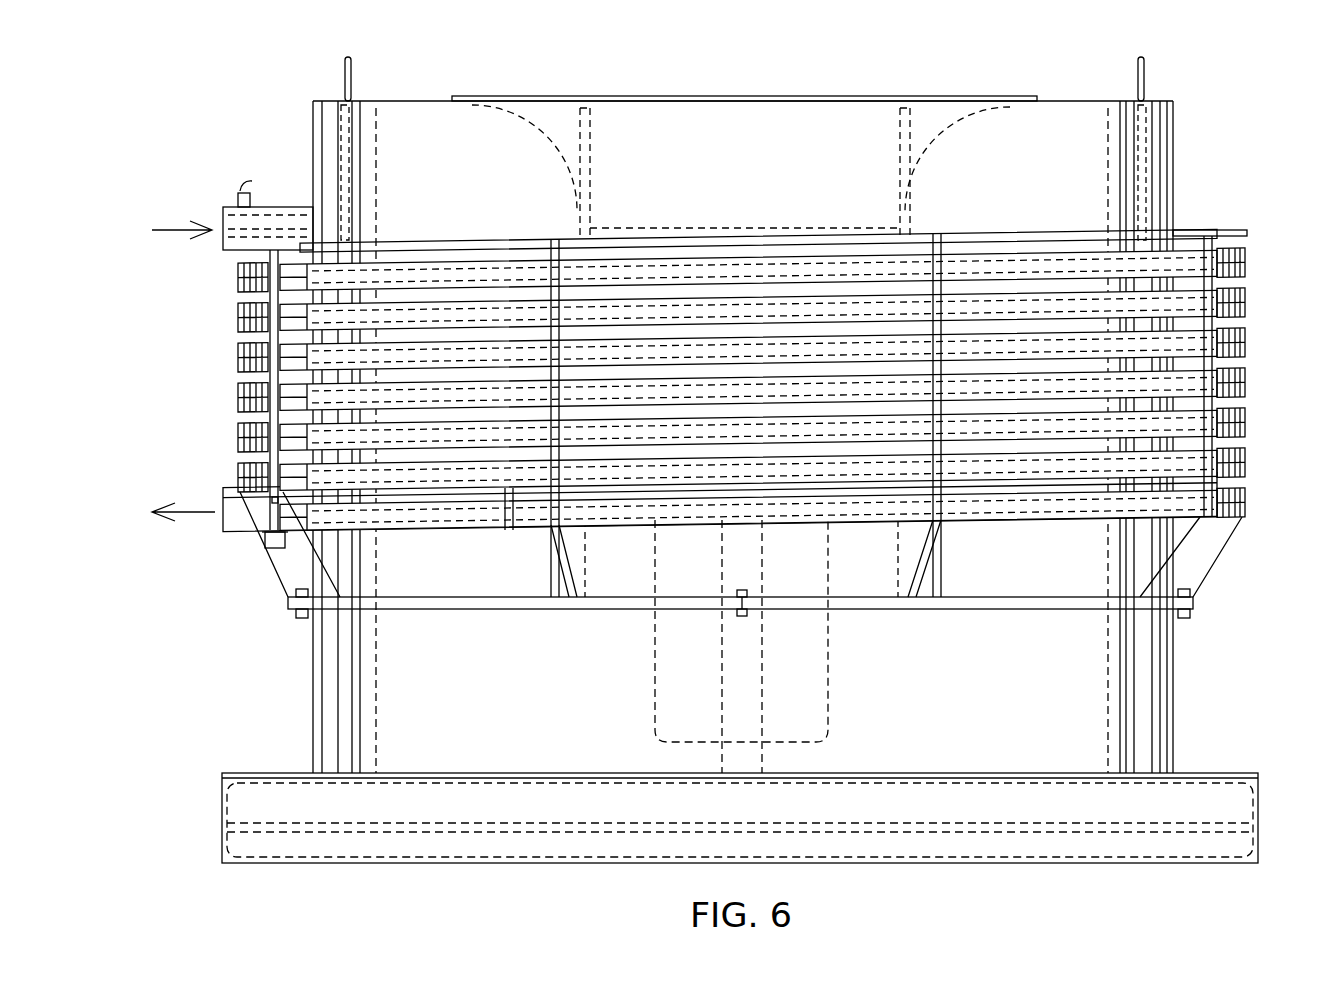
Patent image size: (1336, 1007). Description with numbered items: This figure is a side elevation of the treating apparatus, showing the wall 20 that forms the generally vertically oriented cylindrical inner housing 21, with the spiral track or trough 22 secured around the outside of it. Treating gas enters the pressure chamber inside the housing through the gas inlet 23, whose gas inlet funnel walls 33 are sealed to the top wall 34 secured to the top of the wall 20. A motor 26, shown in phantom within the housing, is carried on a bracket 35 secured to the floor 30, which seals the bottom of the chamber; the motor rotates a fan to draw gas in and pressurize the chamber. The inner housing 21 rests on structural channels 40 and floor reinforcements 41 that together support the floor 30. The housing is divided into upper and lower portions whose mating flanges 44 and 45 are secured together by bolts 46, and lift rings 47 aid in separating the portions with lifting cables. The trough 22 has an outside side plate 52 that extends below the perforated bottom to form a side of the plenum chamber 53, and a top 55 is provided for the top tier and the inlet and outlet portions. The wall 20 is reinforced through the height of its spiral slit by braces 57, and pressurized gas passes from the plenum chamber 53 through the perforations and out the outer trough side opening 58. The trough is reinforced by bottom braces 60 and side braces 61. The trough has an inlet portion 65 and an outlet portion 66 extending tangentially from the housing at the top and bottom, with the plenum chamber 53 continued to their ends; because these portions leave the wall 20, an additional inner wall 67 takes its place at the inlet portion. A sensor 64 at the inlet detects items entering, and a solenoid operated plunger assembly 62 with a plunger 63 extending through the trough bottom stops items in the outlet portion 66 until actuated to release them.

The wall 20 is at (1176, 137).
The cylindrical inner housing 21 is at (1202, 164).
The spiral track or trough 22 is at (1250, 382).
The gas inlet 23 is at (824, 118).
The motor 26 is at (828, 680).
The floor 30 is at (905, 775).
The gas inlet funnel walls 33 is at (945, 100).
The top wall 34 is at (1087, 100).
The bracket 35 is at (725, 708).
The structural channels 40 is at (222, 815).
The floor reinforcements 41 is at (453, 803).
The mating flange 44 is at (1195, 598).
The mating flange 45 is at (1195, 609).
The bolts 46 is at (298, 618).
The lift rings 47 is at (352, 62).
The outside side plate 52 is at (238, 357).
The plenum chamber 53 is at (212, 248).
The top 55 is at (1226, 231).
The braces 57 is at (592, 152).
The outer trough side opening 58 is at (1250, 320).
The bottom braces 60 is at (290, 575).
The side braces 61 is at (556, 240).
The solenoid operated plunger assembly 62 is at (278, 548).
The plunger 63 is at (243, 538).
The sensor 64 is at (240, 197).
The inlet portion 65 is at (222, 212).
The outlet portion 66 is at (222, 490).
The inner wall 67 is at (277, 215).